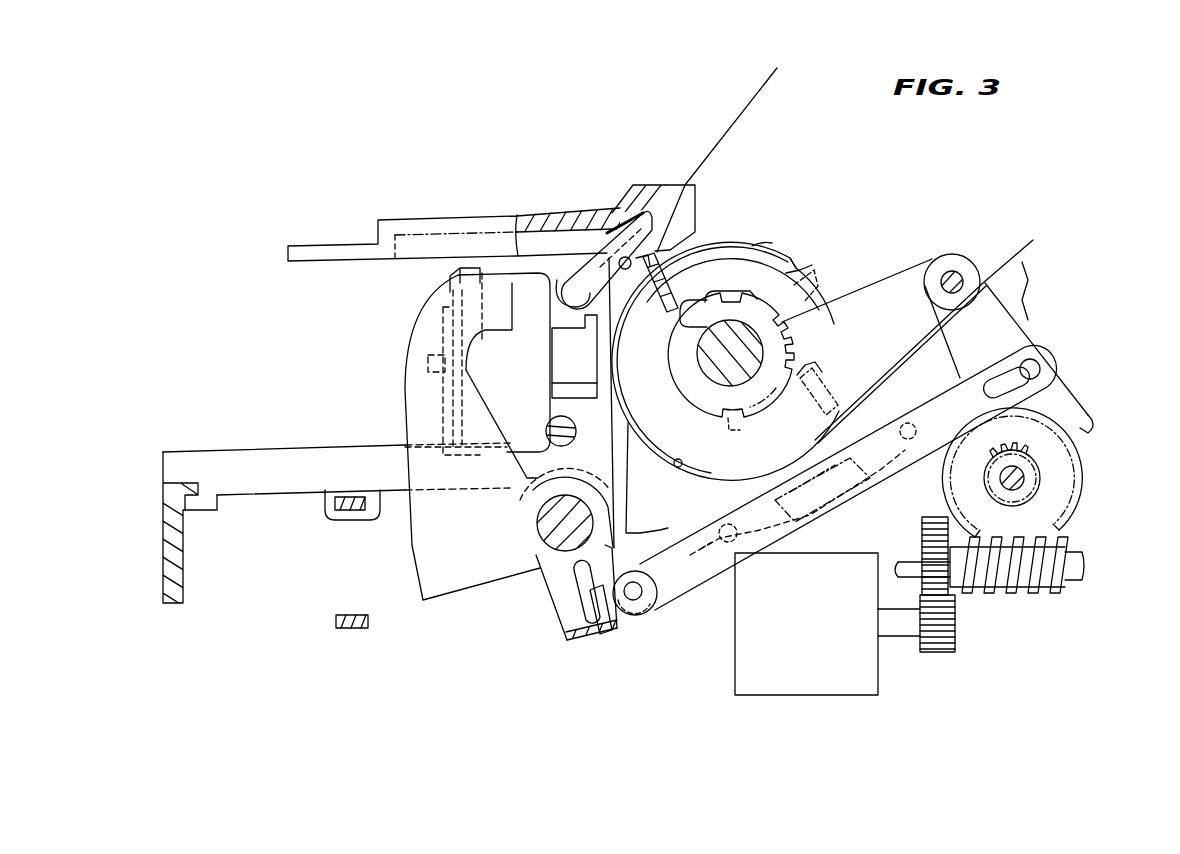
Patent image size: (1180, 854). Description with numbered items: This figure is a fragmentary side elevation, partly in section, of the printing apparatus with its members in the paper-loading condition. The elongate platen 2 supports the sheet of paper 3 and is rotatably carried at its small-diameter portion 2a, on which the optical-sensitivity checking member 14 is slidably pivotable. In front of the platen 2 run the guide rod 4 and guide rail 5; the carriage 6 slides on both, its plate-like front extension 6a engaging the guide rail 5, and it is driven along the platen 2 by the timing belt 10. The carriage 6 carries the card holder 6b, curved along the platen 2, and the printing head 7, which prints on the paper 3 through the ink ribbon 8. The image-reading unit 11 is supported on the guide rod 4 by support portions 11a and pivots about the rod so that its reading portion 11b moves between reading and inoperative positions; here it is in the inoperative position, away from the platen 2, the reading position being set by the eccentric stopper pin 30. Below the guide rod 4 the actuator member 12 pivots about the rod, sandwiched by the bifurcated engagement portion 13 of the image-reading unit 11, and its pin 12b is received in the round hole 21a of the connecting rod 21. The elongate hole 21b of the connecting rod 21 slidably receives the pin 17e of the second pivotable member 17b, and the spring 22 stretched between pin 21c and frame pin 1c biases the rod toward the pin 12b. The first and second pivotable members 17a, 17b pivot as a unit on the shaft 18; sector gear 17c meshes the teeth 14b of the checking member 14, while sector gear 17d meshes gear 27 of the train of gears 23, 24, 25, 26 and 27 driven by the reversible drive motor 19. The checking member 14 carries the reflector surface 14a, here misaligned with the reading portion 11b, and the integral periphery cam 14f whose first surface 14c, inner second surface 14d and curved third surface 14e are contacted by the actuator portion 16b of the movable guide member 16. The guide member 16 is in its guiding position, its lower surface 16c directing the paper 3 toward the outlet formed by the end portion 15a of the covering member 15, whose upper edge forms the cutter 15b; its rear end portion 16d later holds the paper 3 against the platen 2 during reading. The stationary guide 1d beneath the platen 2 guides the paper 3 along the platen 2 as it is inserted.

The pin 1c is at (718, 540).
The stationary guide 1d is at (676, 466).
The platen 2 is at (700, 447).
The small-diameter portion 2a is at (725, 385).
The sheet of paper 3 is at (725, 125).
The guide rod 4 is at (540, 527).
The guide rail 5 is at (170, 522).
The carriage 6 is at (268, 500).
The plate-like front extension 6a is at (205, 470).
The card holder 6b is at (600, 330).
The printing head 7 is at (527, 402).
The ink ribbon 8 is at (605, 370).
The timing belt 10 is at (347, 512).
The image-reading unit 11 is at (405, 405).
The support portion 11a is at (576, 492).
The reading portion 11b is at (518, 315).
The actuator member 12 is at (580, 640).
The pin 12b is at (645, 607).
The bifurcated engagement portion 13 is at (580, 612).
The optical-sensitivity checking member 14 is at (684, 368).
The reflector surface 14a is at (768, 246).
The teeth 14b is at (740, 430).
The first surface 14c is at (786, 254).
The second surface 14d is at (702, 306).
The third surface 14e is at (688, 285).
The periphery cam 14f is at (812, 265).
The covering member 15 is at (463, 220).
The end portion 15a is at (705, 213).
The cutter 15b is at (688, 185).
The movable guide member 16 is at (558, 275).
The actuator portion 16b is at (665, 312).
The lower surface 16c is at (565, 215).
The rear end portion 16d is at (640, 232).
The first pivotable member 17a is at (890, 300).
The second pivotable member 17b is at (1018, 330).
The sector gear 17c is at (818, 372).
The sector gear 17d is at (1090, 416).
The pin 17e is at (1041, 367).
The shaft 18 is at (954, 256).
The drive motor 19 is at (812, 682).
The connecting rod 21 is at (702, 585).
The round hole 21a is at (630, 612).
The elongate hole 21b is at (996, 392).
The pin 21c is at (917, 430).
The spring 22 is at (808, 508).
The gear 23 is at (938, 640).
The gear 24 is at (925, 538).
The gear 25 is at (1020, 592).
The gear 26 is at (1045, 493).
The gear 27 is at (1030, 462).
The stopper pin 30 is at (578, 438).